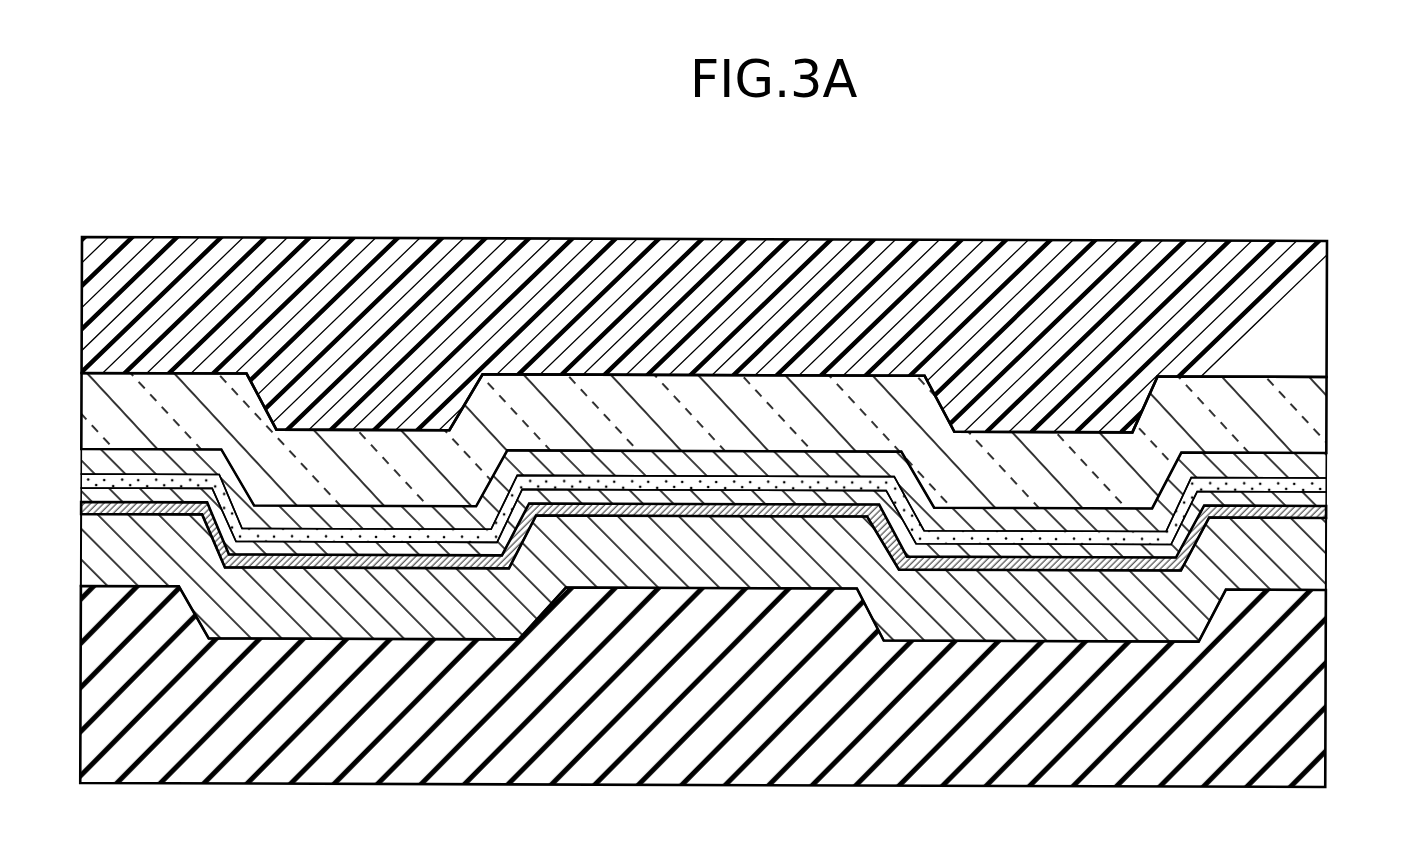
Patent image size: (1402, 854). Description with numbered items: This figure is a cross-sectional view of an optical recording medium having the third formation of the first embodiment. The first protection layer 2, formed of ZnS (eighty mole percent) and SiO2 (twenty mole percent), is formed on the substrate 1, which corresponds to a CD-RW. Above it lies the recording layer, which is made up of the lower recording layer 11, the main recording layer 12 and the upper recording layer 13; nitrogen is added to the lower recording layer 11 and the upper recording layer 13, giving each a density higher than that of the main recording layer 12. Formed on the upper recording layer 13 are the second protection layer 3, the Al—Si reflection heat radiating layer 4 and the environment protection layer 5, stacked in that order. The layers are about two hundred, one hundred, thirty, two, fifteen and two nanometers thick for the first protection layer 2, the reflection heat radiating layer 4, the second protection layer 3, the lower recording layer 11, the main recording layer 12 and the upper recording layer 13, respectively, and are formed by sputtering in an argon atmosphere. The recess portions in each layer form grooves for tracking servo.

The substrate 1 is at (1318, 672).
The first protection layer 2 is at (1322, 574).
The lower recording layer 11 is at (1323, 514).
The main recording layer 12 is at (1321, 498).
The upper recording layer 13 is at (1327, 482).
The second protection layer 3 is at (1314, 461).
The Al—Si reflection heat radiating layer 4 is at (1306, 416).
The environment protection layer 5 is at (1310, 318).